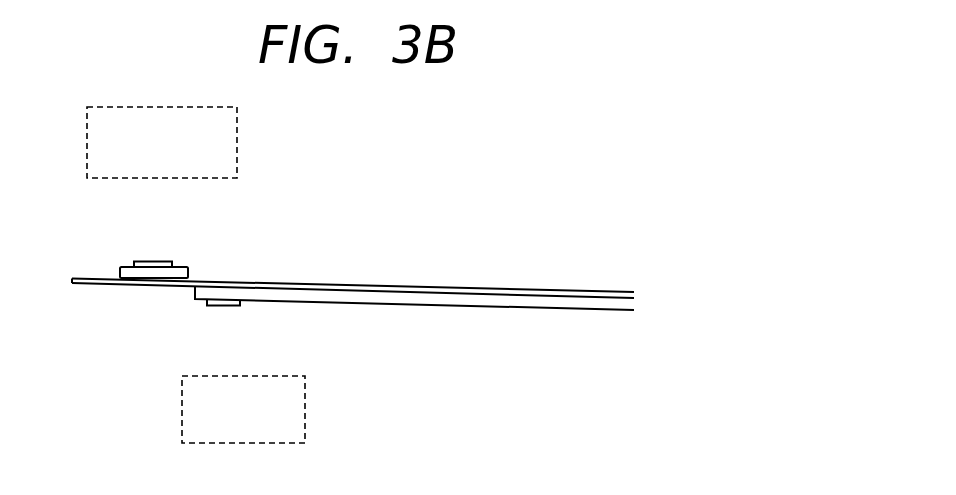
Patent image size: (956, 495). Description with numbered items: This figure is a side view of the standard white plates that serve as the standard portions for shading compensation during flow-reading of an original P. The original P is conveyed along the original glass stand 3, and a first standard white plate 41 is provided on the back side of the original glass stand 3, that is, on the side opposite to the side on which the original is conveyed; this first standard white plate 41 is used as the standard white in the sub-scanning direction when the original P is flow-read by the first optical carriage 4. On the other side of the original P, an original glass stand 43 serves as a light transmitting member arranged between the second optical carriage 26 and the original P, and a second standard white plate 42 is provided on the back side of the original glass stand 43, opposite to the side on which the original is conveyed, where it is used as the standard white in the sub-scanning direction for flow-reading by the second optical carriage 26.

The second optical carriage 26 is at (174, 157).
The original P is at (600, 290).
The original glass stand 43 is at (126, 269).
The second standard white plate 42 is at (159, 262).
The original glass stand 3 is at (303, 288).
The first standard white plate 41 is at (226, 308).
The first optical carriage 4 is at (236, 423).